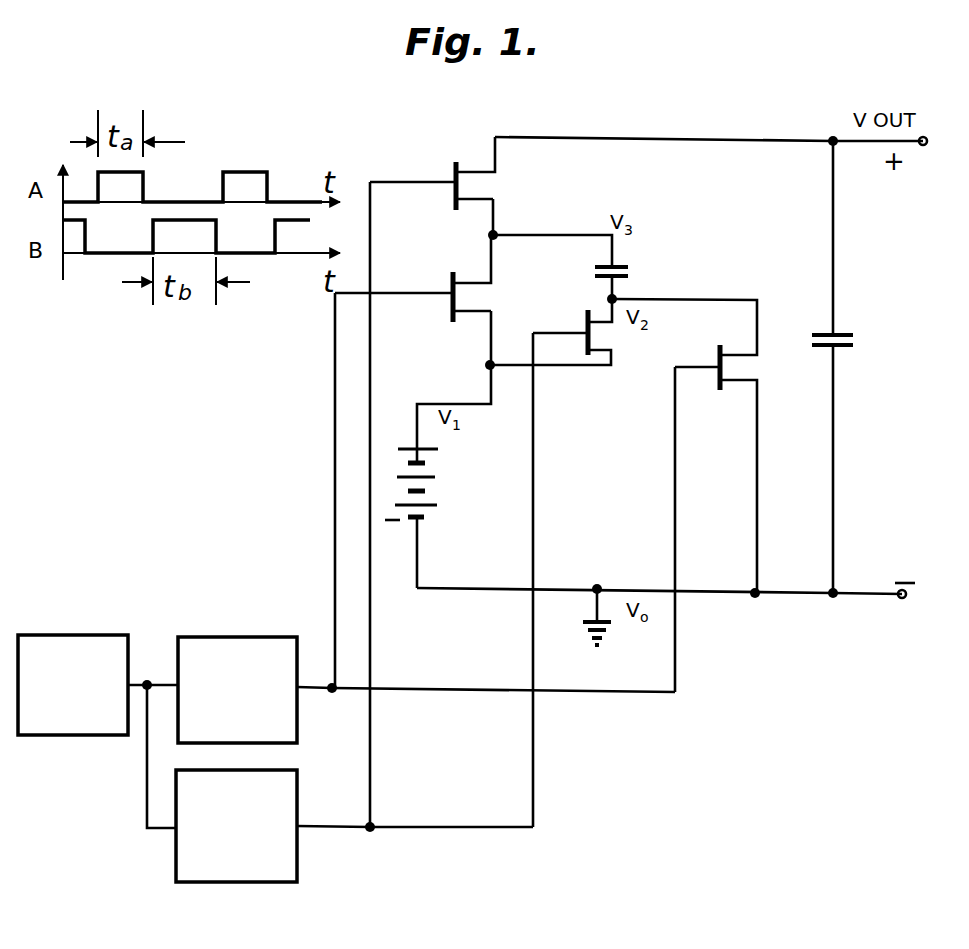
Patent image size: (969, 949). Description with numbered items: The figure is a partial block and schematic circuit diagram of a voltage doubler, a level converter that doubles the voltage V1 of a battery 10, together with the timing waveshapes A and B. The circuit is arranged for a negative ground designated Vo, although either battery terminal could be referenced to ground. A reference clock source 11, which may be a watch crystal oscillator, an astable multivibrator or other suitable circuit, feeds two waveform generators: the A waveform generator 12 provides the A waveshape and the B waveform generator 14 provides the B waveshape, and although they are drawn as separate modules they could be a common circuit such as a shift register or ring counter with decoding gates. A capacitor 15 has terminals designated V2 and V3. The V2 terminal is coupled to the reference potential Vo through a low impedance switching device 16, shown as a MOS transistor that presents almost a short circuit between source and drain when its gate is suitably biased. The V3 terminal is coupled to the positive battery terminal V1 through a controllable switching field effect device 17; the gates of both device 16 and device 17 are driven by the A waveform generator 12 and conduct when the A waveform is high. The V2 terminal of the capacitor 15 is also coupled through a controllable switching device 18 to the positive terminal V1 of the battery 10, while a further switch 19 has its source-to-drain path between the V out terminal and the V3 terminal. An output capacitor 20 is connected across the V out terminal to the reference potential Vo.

The battery 10 is at (438, 487).
The reference clock source 11 is at (72, 635).
The A waveform generator 12 is at (212, 637).
The B waveform generator 14 is at (297, 855).
The capacitor 15 is at (629, 262).
The low impedance switching device 16 is at (717, 381).
The controllable switching field effect device 17 is at (452, 283).
The controllable switching device 18 is at (587, 326).
The switch 19 is at (455, 175).
The output capacitor 20 is at (845, 333).